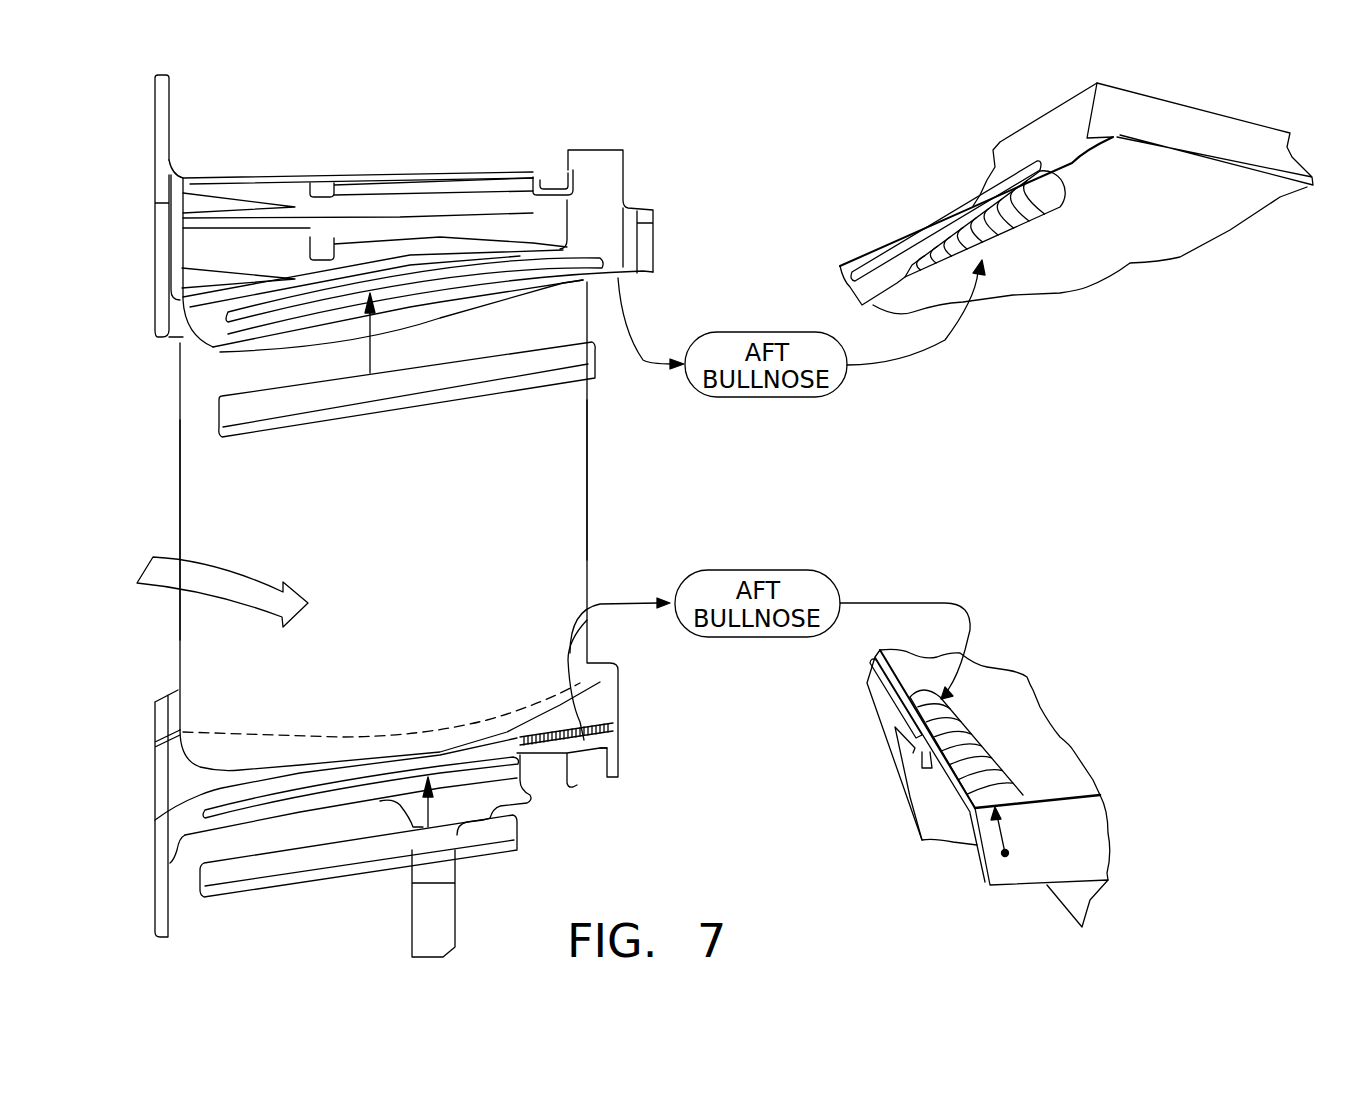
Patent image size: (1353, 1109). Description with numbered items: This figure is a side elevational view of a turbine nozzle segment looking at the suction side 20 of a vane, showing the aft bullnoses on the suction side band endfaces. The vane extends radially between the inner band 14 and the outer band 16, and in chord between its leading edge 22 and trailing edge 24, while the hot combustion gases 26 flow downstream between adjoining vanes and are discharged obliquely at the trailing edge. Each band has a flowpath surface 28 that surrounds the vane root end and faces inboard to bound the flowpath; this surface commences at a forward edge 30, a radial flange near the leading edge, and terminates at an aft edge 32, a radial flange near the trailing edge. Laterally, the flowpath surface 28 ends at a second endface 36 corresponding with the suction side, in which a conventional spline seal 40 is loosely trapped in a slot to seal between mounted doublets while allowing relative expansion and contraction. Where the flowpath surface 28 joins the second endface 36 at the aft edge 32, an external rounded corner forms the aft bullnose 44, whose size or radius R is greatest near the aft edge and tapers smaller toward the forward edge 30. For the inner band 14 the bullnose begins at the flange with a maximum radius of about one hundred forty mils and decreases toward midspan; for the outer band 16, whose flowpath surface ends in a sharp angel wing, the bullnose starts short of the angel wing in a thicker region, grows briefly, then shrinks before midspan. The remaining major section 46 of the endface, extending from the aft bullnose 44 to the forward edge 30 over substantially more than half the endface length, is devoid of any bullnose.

The inner band 14 is at (567, 778).
The outer band 16 is at (545, 168).
The suction side 20 is at (390, 535).
The leading edge 22 is at (178, 535).
The trailing edge 24 is at (590, 510).
The combustion gases 26 is at (265, 618).
The flowpath surface 28 is at (480, 300).
The forward edge 30 is at (155, 332).
The aft edge 32 is at (653, 232).
The second endface 36 is at (196, 330).
The spline seal 40 is at (320, 427).
The aft bullnose 44 is at (1027, 240).
The major section 46 is at (290, 328).
The radius R is at (1037, 210).